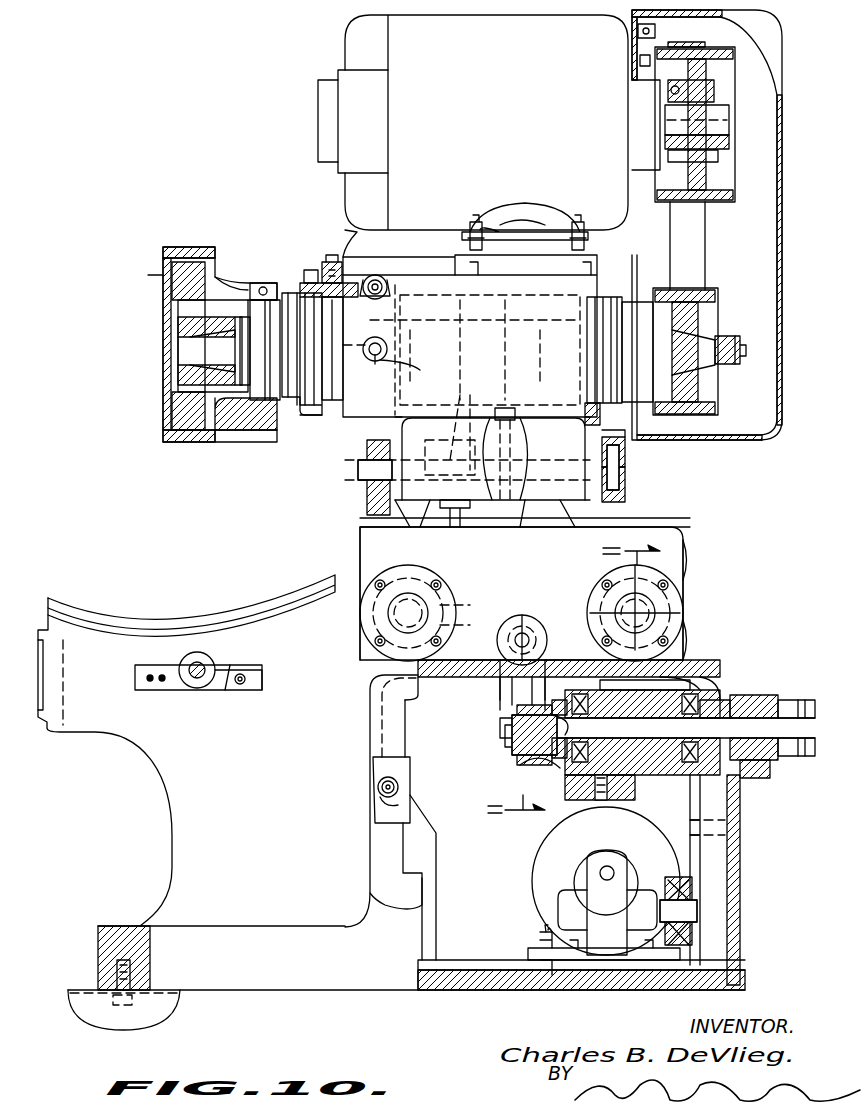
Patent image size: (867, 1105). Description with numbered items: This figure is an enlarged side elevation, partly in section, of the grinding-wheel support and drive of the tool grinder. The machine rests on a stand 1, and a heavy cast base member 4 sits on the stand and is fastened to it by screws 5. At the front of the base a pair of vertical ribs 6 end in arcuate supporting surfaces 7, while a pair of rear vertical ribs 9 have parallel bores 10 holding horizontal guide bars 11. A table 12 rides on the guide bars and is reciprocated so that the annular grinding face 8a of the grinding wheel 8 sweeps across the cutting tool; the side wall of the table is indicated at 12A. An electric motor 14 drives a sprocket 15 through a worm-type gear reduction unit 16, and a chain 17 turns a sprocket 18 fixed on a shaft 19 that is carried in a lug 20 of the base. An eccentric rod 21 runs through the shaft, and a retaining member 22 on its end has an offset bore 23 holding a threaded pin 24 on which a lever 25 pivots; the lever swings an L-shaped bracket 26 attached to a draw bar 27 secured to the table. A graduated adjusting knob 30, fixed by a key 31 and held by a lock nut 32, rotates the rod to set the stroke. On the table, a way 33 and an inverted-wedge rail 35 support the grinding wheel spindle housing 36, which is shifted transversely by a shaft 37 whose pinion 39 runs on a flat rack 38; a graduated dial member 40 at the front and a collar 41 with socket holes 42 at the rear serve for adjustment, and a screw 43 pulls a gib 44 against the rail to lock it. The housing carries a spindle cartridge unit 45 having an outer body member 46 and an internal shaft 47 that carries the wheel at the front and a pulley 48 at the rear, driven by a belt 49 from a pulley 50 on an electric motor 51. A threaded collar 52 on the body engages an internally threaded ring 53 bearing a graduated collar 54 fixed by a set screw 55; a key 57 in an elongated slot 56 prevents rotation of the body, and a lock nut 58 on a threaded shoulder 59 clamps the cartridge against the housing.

The stand 1 is at (150, 1003).
The base member 4 is at (383, 801).
The screws 5 is at (100, 1018).
The vertical ribs 6 is at (218, 656).
The arcuate supporting surfaces 7 is at (135, 625).
The grinding wheel 8 is at (205, 262).
The annular grinding face 8a is at (160, 272).
The vertical ribs 9 is at (590, 598).
The parallel bores 10 is at (490, 630).
The guide bars 11 is at (565, 681).
The table 12 is at (680, 535).
The head casting side wall 12A is at (690, 566).
The electric motor 14 is at (620, 836).
The sprocket 15 is at (692, 895).
The worm-type gear reduction unit 16 is at (612, 918).
The chain 17 is at (740, 800).
The sprocket 18 is at (695, 690).
The shaft 19 is at (770, 770).
The lug 20 is at (565, 790).
The rod 21 is at (714, 700).
The retaining member 22 is at (569, 717).
The bore 23 is at (519, 777).
The threaded pin 24 is at (505, 737).
The lever 25 is at (548, 760).
The L-shaped bracket 26 is at (510, 695).
The draw bar 27 is at (522, 640).
The graduated adjusting knob 30 is at (770, 695).
The key 31 is at (657, 737).
The lock nut 32 is at (802, 700).
The way 33 is at (360, 527).
The rail 35 is at (525, 529).
The grinding wheel spindle housing 36 is at (470, 336).
The shaft 37 is at (467, 459).
The flat rack 38 is at (408, 598).
The pinion 39 is at (455, 421).
The graduated dial member 40 is at (358, 465).
The collar 41 is at (628, 455).
The socket holes 42 is at (628, 500).
The screw 43 is at (505, 408).
The gib 44 is at (455, 520).
The spindle cartridge unit 45 is at (292, 340).
The outer body member 46 is at (320, 425).
The internal shaft 47 is at (715, 345).
The pulley 48 is at (705, 290).
The belt 49 is at (700, 245).
The pulley 50 is at (725, 212).
The electric motor 51 is at (473, 122).
The threaded collar 52 is at (305, 300).
The internally threaded ring 53 is at (308, 270).
The graduated collar 54 is at (350, 240).
The set screw 55 is at (331, 255).
The elongated slot 56 is at (388, 345).
The key 57 is at (414, 361).
The lock nut 58 is at (625, 295).
The threaded shoulder 59 is at (385, 280).